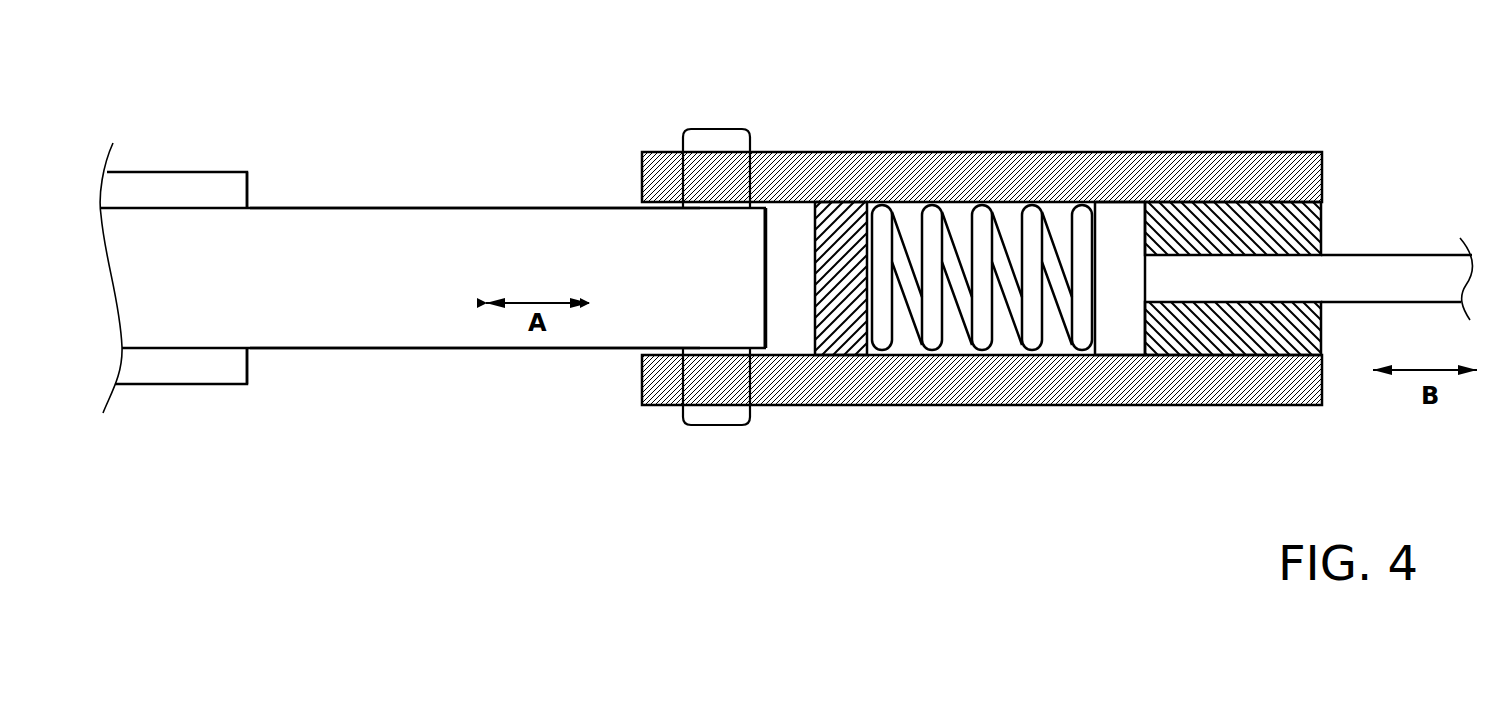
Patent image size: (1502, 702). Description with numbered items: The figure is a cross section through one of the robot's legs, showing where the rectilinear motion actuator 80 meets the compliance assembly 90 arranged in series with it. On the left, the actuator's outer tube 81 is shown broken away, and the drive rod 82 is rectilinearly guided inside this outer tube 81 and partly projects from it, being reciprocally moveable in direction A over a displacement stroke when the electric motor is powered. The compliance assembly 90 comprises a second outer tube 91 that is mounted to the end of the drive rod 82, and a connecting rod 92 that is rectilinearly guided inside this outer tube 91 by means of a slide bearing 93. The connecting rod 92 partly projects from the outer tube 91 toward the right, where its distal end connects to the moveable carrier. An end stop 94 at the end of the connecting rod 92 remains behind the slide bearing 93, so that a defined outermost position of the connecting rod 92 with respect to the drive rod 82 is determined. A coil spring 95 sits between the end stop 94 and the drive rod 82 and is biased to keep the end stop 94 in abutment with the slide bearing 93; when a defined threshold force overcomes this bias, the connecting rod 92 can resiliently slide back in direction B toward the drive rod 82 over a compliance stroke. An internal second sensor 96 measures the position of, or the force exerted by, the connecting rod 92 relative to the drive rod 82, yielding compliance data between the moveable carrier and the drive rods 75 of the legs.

The drive rods 75 is at (490, 217).
The rectilinear motion actuator 80 is at (214, 167).
The outer tube 81 is at (247, 180).
The drive rod 82 is at (393, 327).
The compliance assembly 90 is at (1114, 406).
The outer tube 91 is at (815, 173).
The connecting rod 92 is at (1388, 265).
The slide bearing 93 is at (1253, 215).
The end stop 94 is at (1120, 213).
The coil spring 95 is at (983, 218).
The second sensor 96 is at (838, 343).